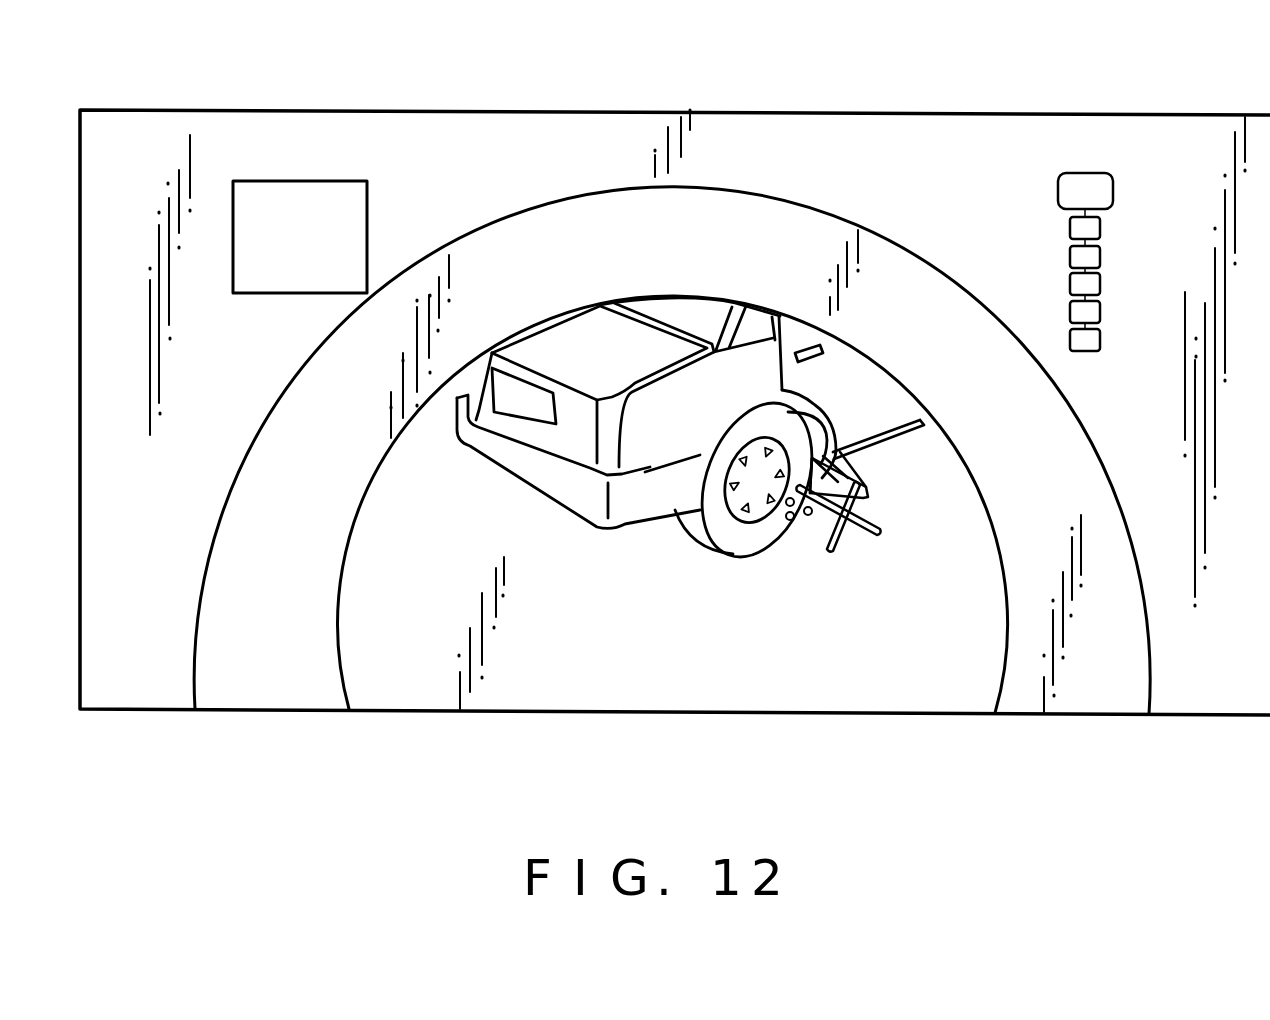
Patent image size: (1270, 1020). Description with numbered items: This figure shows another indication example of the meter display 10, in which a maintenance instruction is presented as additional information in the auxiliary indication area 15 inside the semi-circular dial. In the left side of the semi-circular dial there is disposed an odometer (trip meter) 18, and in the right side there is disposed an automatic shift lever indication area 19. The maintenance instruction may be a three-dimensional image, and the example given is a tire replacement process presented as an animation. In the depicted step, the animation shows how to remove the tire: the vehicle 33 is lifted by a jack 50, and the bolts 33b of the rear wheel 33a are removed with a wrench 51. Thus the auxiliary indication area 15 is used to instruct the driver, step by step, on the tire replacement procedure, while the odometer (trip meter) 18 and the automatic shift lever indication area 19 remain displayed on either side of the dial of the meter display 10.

The meter display 10 is at (727, 110).
The auxiliary indication area 15 is at (618, 645).
The odometer (trip meter) 18 is at (277, 181).
The automatic shift lever indication area 19 is at (1073, 160).
The vehicle 33 is at (570, 455).
The rear wheel 33a is at (745, 523).
The bolts 33b is at (793, 522).
The jack 50 is at (870, 482).
The wrench image 51 is at (855, 527).